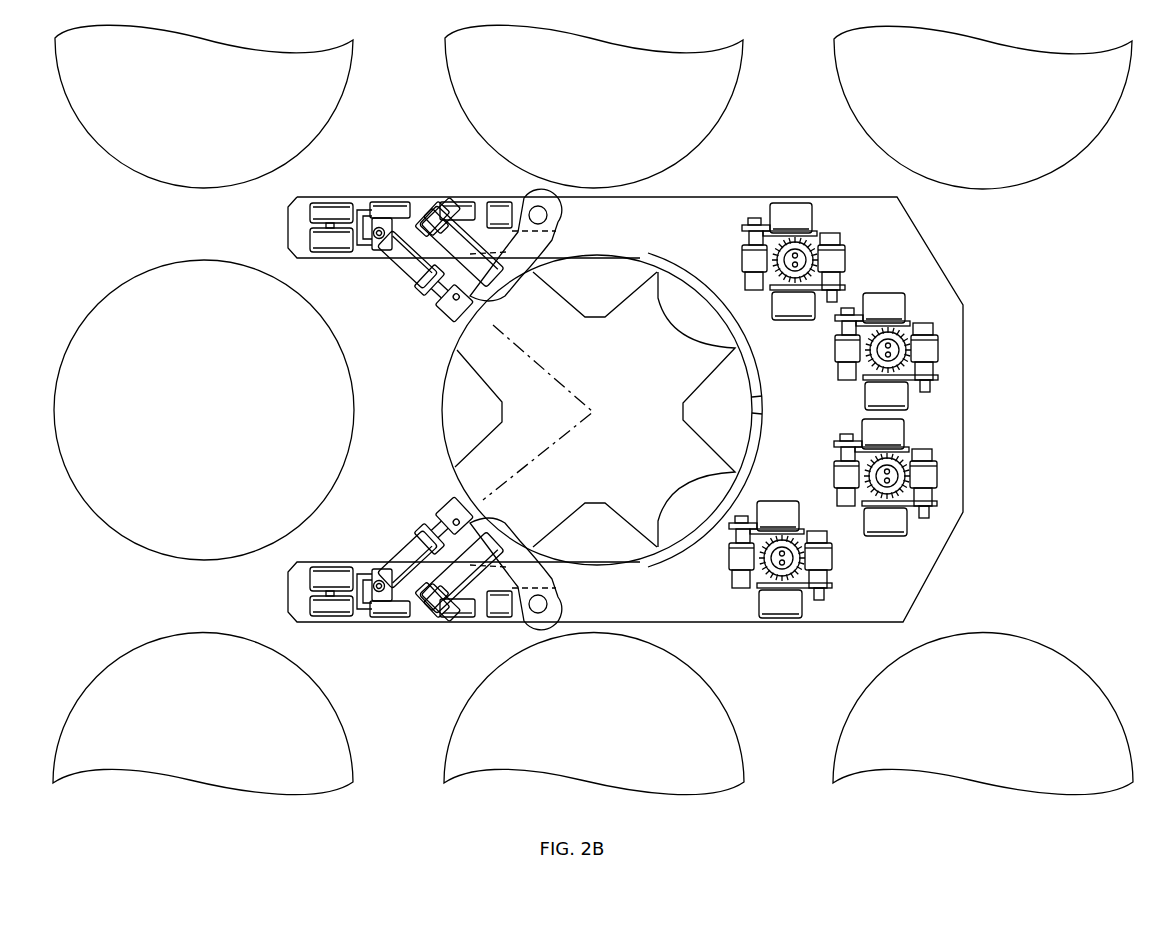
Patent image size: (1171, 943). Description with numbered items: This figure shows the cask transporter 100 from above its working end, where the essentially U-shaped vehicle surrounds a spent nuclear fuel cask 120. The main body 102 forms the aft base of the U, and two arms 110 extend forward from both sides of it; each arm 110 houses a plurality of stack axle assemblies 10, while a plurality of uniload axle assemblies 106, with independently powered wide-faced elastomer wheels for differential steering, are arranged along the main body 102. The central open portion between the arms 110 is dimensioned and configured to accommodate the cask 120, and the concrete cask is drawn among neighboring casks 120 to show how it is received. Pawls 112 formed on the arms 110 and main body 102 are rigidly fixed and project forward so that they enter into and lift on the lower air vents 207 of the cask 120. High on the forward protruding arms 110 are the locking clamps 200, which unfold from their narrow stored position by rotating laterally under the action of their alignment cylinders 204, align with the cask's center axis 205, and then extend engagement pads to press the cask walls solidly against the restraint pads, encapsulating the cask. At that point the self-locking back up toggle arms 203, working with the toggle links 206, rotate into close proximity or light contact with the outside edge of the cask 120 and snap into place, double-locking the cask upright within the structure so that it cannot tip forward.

The stack axle assembly 10 is at (333, 204).
The cask transporter 100 is at (625, 413).
The main body 102 is at (727, 196).
The uniload axle assembly 106 is at (798, 228).
The arm 110 is at (408, 210).
The pawl 112 is at (698, 292).
The spent nuclear fuel cask 120 is at (350, 84).
The locking clamp 200 is at (416, 270).
The back up toggle arm 203 is at (518, 278).
The alignment cylinder 204 is at (438, 203).
The center axis 205 is at (443, 404).
The back up toggle link 206 is at (470, 252).
The lower air vent 207 is at (446, 391).